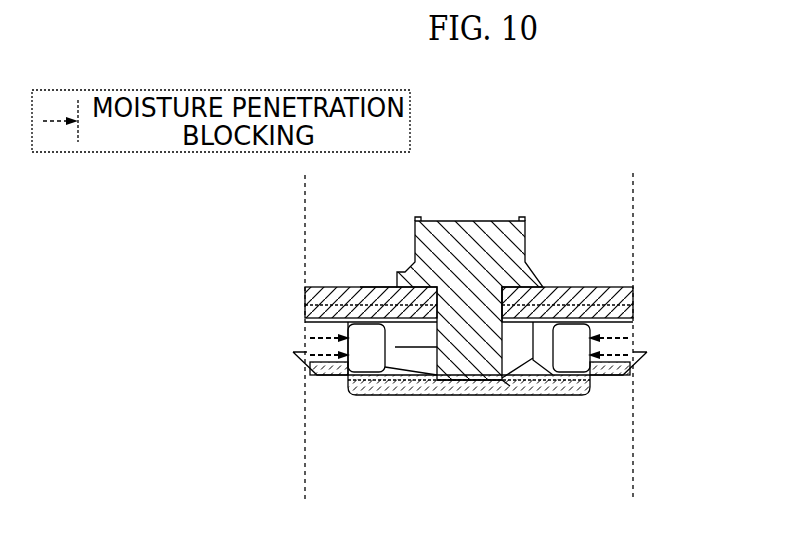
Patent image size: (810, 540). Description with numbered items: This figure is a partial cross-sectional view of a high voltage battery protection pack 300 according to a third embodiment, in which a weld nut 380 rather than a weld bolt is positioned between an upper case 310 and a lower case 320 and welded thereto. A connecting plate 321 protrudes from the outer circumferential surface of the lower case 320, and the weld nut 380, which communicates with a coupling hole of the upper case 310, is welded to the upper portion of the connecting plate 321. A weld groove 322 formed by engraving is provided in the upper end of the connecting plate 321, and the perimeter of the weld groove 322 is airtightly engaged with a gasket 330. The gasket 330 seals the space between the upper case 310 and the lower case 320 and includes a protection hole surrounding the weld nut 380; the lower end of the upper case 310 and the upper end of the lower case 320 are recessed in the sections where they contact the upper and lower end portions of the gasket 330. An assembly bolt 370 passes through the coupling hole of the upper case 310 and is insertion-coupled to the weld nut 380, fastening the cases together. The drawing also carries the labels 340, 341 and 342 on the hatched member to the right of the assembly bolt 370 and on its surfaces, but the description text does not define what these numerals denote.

The high voltage battery protection pack 300 is at (498, 143).
The upper case 310 is at (298, 324).
The lower case 320 is at (606, 383).
The connecting plate 321 is at (405, 382).
The weld groove 322 is at (537, 385).
The gasket 330 is at (582, 348).
The second member (plate) 340 is at (577, 300).
The hole of second member 341 is at (470, 305).
The surface of second member 342 is at (375, 285).
The assembly bolt 370 is at (480, 252).
The weld nut 380 is at (513, 378).